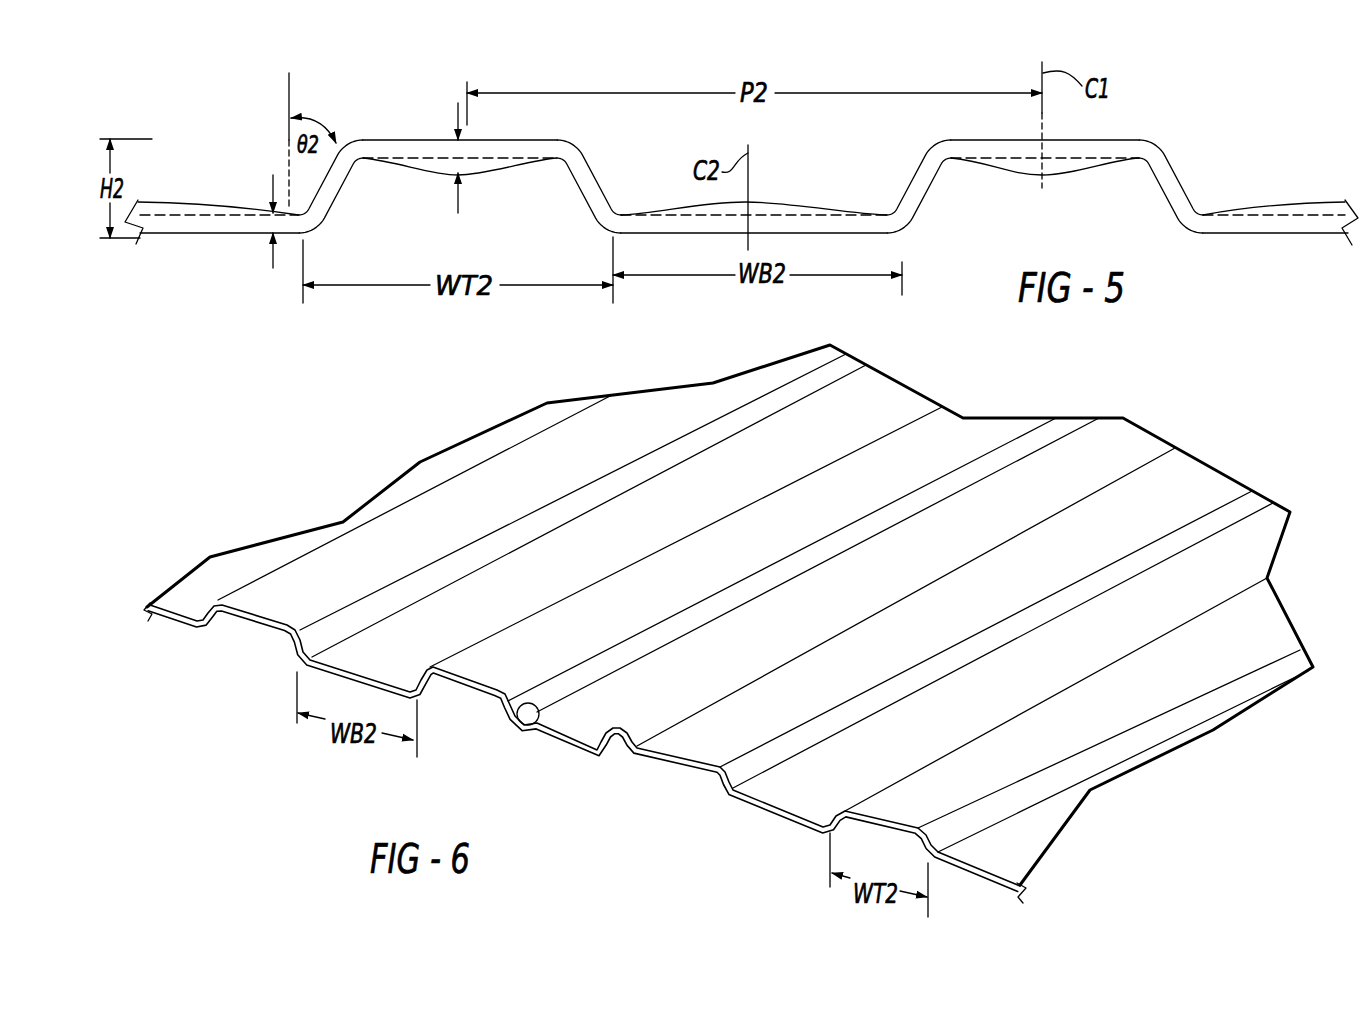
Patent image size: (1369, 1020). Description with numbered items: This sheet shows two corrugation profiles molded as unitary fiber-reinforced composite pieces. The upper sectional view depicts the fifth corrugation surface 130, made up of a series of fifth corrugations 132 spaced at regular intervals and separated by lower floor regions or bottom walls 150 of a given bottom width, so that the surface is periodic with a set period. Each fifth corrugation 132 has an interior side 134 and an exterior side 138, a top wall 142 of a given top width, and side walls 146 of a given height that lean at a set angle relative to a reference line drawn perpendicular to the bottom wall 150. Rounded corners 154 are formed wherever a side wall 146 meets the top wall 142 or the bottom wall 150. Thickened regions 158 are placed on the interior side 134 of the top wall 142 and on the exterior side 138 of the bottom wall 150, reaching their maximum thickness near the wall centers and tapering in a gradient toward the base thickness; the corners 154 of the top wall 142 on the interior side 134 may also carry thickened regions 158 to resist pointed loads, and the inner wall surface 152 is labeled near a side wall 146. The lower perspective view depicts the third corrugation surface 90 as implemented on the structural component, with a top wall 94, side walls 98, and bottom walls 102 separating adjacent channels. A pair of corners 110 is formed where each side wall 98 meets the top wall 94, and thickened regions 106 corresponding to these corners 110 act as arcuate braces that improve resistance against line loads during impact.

In FIG. 6, the third corrugation surface 90 is at (734, 620).
In FIG. 6, the top wall 94 is at (977, 433).
In FIG. 6, the side walls 98 is at (1063, 430).
In FIG. 6, the bottom wall 102 is at (1140, 445).
In FIG. 6, the thickened regions 106 is at (635, 745).
In FIG. 6, the corners 110 is at (540, 728).
In FIG. 5, the fifth corrugation surface 130 is at (743, 190).
In FIG. 5, the fifth corrugation 132 is at (1193, 168).
In FIG. 5, the interior side 134 is at (1300, 235).
In FIG. 5, the exterior side 138 is at (1207, 207).
In FIG. 5, the top wall 142 is at (430, 140).
In FIG. 5, the side walls 146 is at (607, 183).
In FIG. 5, the bottom wall 150 is at (215, 235).
In FIG. 5, the inner surface of side wall 152 is at (343, 167).
In FIG. 5, the corners 154 is at (912, 162).
In FIG. 5, the thickened regions 158 is at (473, 170).